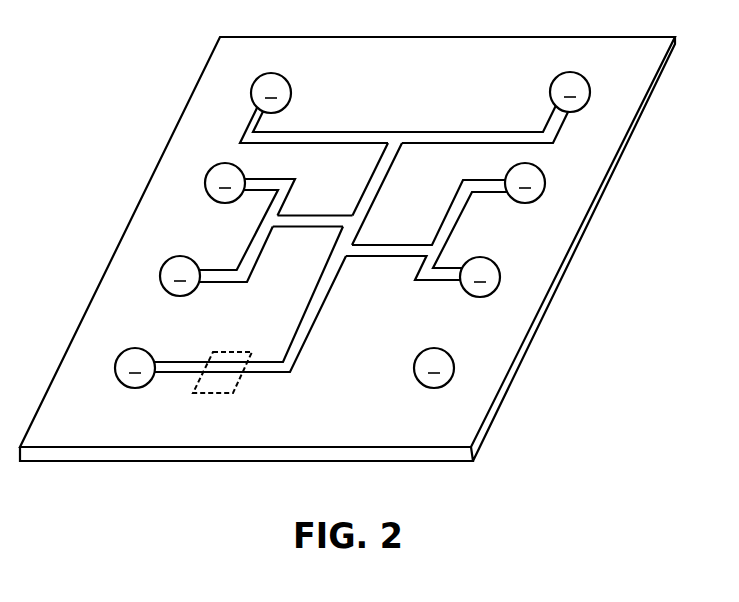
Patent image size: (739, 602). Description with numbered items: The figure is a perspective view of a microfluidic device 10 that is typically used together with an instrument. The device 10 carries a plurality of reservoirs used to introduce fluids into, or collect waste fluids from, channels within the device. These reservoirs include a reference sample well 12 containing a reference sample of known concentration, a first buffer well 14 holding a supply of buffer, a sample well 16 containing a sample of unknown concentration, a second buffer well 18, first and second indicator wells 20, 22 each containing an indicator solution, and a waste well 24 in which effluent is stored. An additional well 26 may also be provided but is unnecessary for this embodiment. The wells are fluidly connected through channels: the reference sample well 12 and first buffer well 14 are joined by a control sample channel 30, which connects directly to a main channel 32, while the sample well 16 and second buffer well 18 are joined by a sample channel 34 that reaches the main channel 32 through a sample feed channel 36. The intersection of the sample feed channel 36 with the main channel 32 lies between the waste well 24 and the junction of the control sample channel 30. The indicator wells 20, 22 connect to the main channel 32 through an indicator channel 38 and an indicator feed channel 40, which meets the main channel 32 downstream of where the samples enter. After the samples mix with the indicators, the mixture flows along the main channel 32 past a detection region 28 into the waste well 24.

The microfluidic device 10 is at (505, 36).
The reference sample well 12 is at (275, 73).
The first buffer well 14 is at (574, 72).
The sample well 16 is at (212, 175).
The second buffer well 18 is at (172, 265).
The first indicator well 20 is at (537, 192).
The second indicator well 22 is at (498, 283).
The waste well 24 is at (123, 355).
The additional well 26 is at (448, 378).
The detection region 28 is at (235, 385).
The control sample channel 30 is at (425, 135).
The main channel 32 is at (361, 214).
The sample channel 34 is at (257, 250).
The sample feed channel 36 is at (309, 218).
The indicator channel 38 is at (449, 228).
The indicator feed channel 40 is at (383, 253).